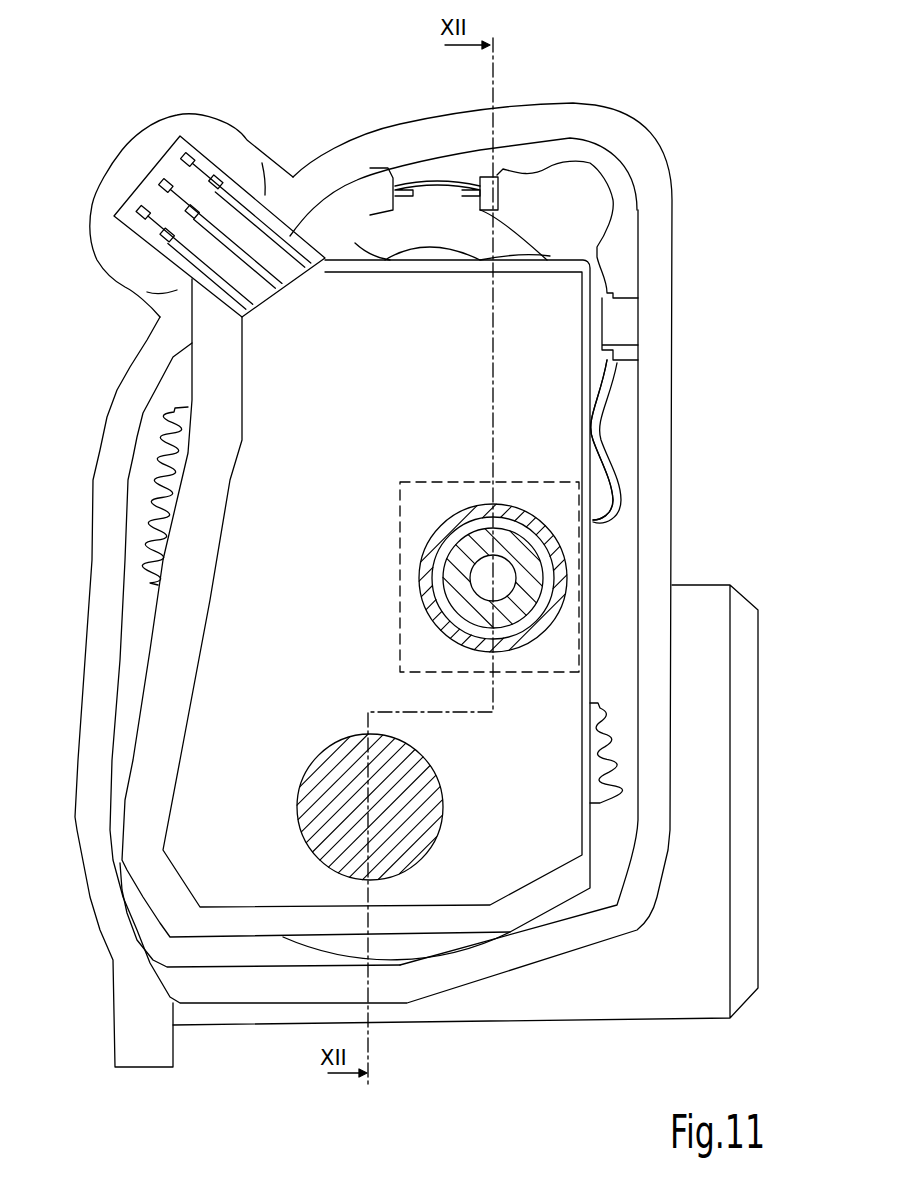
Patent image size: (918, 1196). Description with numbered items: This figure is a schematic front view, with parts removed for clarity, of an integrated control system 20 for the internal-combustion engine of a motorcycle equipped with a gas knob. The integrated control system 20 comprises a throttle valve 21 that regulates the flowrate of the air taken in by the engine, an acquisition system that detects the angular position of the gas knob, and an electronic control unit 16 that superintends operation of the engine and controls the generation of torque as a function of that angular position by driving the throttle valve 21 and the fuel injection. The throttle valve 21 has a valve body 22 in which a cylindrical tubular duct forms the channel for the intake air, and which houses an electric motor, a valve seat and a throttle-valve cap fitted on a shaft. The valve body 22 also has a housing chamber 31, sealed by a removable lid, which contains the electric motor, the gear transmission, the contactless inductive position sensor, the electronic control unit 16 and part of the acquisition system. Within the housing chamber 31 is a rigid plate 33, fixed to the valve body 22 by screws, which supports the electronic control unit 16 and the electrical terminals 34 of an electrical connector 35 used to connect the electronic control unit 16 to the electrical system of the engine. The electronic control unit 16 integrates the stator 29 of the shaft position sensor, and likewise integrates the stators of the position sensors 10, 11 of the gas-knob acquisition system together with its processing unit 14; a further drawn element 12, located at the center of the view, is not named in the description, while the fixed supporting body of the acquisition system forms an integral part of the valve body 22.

The position sensor 10 is at (600, 574).
The position sensor 11 is at (678, 461).
The bearing 12 is at (463, 518).
The processing unit 14 is at (546, 485).
The electronic control unit 16 is at (268, 365).
The integrated control system 20 is at (752, 315).
The throttle valve 21 is at (70, 492).
The valve body 22 is at (662, 478).
The stator 29 is at (410, 840).
The housing chamber 31 is at (222, 947).
The rigid plate 33 is at (583, 264).
The electrical terminals 34 is at (185, 157).
The electrical connector 35 is at (121, 148).